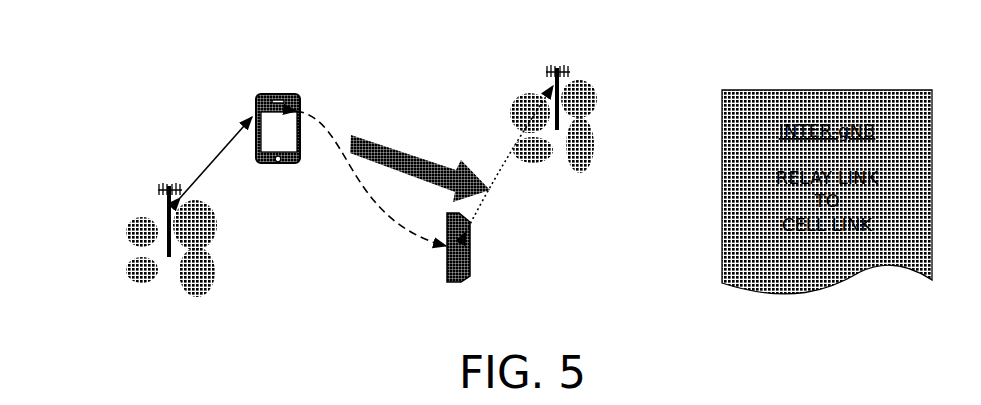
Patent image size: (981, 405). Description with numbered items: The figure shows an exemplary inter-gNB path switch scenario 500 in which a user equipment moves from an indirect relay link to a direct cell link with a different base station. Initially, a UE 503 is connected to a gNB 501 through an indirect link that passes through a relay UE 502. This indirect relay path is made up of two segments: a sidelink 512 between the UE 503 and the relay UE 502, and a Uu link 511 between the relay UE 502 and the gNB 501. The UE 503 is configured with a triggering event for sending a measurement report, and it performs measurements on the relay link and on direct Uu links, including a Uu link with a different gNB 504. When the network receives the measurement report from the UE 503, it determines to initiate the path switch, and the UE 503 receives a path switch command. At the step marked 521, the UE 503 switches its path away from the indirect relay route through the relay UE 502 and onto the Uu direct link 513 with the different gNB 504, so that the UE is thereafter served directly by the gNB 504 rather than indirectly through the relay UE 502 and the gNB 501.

The communication system 500 is at (164, 62).
The gNB 501 is at (169, 211).
The relay UE 502 is at (256, 108).
The UE 503 is at (470, 237).
The different gNB 504 is at (553, 86).
The Uu link 511 is at (216, 157).
The sidelink 512 is at (371, 178).
The Uu direct link 513 is at (509, 159).
The path switch step 521 is at (420, 168).